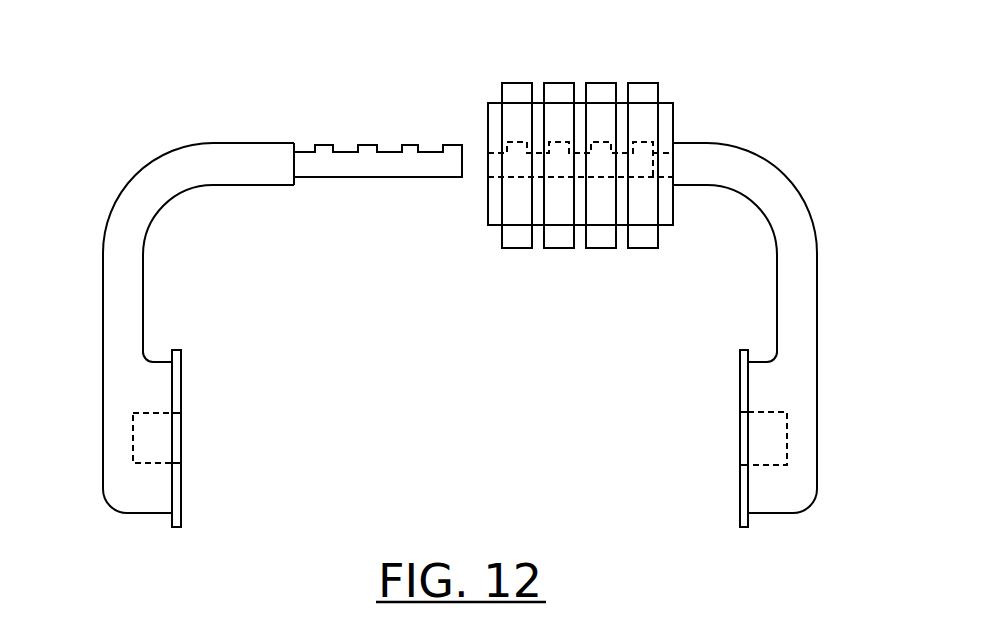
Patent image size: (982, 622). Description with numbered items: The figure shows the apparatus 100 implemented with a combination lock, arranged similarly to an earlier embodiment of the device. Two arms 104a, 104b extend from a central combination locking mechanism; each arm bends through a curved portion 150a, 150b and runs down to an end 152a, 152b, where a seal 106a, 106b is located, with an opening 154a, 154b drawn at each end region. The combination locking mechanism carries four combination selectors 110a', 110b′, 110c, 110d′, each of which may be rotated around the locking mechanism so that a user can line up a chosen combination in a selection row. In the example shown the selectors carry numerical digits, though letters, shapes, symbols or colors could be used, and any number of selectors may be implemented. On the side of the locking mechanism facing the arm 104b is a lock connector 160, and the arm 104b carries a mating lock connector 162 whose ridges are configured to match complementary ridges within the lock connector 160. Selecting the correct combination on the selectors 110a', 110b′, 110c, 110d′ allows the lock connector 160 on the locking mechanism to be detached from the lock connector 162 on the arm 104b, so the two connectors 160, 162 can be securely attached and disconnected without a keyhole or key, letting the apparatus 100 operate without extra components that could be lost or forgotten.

The apparatus 100 is at (350, 42).
The arm 104a is at (737, 155).
The arm 104b is at (198, 158).
The seal 106a is at (740, 350).
The seal 106b is at (172, 350).
The combination selector 110a' is at (512, 203).
The combination selector 110b′ is at (557, 83).
The combination selector 110c is at (602, 248).
The combination selector 110d′ is at (645, 83).
The curved portion 150a is at (788, 200).
The curved portion 150b is at (133, 195).
The end 152a is at (798, 500).
The end 152b is at (127, 498).
The opening 154a is at (772, 437).
The opening 154b is at (150, 437).
The lock connector 160 is at (483, 167).
The lock connector 162 is at (323, 143).